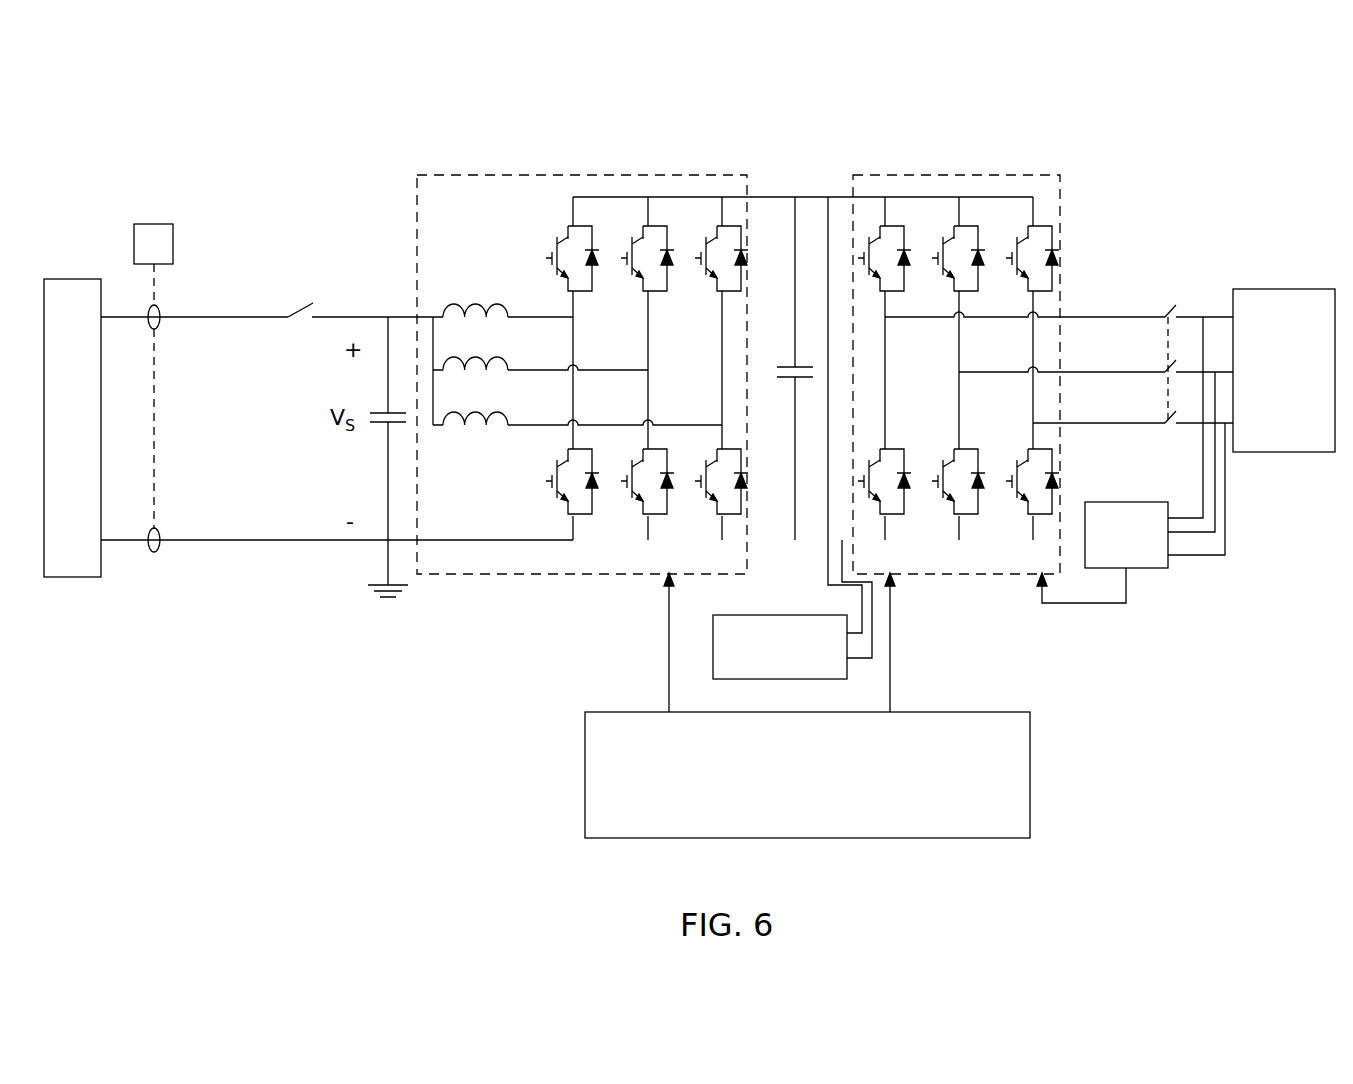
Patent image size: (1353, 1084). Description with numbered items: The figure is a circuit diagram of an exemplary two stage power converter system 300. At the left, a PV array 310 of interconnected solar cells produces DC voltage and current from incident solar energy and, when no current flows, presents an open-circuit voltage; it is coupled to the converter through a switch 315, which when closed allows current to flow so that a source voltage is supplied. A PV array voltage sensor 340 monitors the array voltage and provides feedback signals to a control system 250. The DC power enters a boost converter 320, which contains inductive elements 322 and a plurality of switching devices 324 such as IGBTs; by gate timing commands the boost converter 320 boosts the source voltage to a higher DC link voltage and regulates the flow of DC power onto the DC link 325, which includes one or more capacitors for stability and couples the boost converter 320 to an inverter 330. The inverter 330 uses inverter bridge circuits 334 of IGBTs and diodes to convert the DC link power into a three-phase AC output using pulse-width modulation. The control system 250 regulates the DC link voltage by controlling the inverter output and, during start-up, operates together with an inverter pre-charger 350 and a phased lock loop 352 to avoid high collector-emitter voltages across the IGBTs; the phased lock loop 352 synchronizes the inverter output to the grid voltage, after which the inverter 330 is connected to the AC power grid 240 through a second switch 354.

The power converter system 300 is at (1172, 131).
The PV array 310 is at (73, 279).
The switch 315 is at (288, 314).
The boost converter 320 is at (725, 377).
The inductive elements 322 is at (457, 304).
The switching devices 324 is at (570, 226).
The DC link 325 is at (768, 197).
The inverter 330 is at (1006, 364).
The inverter bridge circuits 334 is at (880, 226).
The PV array voltage sensor 340 is at (155, 224).
The inverter pre-charger 350 is at (781, 615).
The phased lock loop 352 is at (1123, 502).
The switch SW1 354 is at (1163, 312).
The AC power grid 240 is at (1289, 289).
The control system 250 is at (1030, 775).